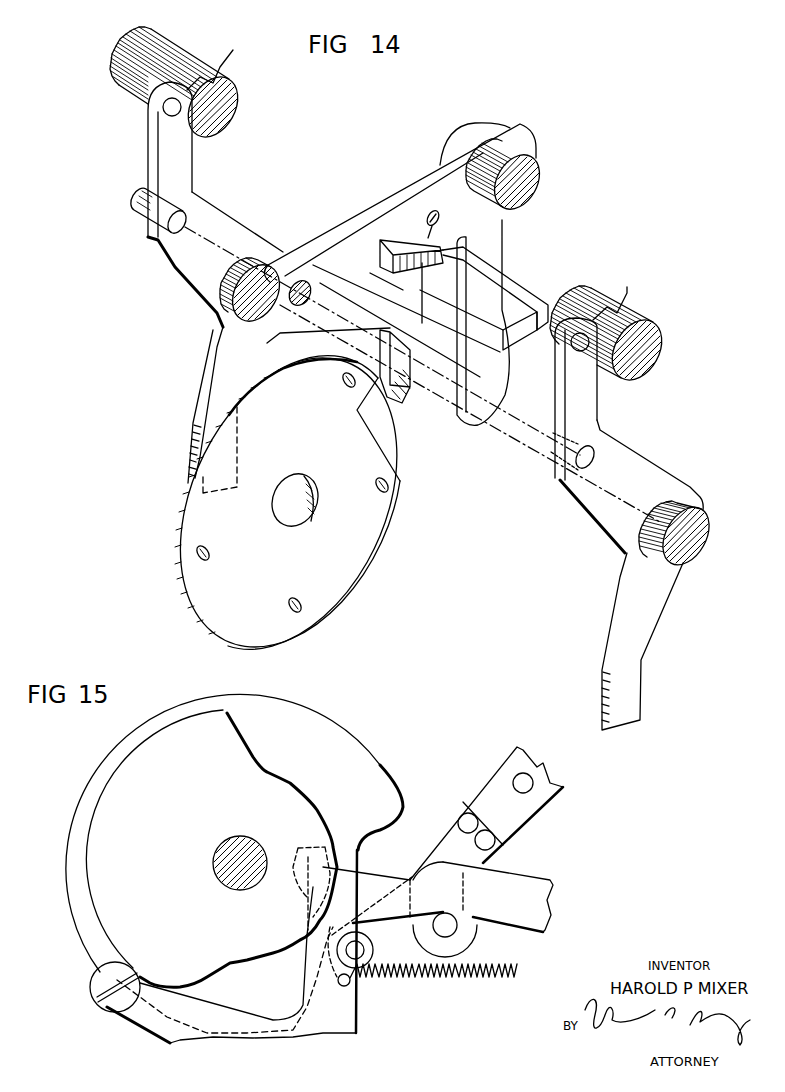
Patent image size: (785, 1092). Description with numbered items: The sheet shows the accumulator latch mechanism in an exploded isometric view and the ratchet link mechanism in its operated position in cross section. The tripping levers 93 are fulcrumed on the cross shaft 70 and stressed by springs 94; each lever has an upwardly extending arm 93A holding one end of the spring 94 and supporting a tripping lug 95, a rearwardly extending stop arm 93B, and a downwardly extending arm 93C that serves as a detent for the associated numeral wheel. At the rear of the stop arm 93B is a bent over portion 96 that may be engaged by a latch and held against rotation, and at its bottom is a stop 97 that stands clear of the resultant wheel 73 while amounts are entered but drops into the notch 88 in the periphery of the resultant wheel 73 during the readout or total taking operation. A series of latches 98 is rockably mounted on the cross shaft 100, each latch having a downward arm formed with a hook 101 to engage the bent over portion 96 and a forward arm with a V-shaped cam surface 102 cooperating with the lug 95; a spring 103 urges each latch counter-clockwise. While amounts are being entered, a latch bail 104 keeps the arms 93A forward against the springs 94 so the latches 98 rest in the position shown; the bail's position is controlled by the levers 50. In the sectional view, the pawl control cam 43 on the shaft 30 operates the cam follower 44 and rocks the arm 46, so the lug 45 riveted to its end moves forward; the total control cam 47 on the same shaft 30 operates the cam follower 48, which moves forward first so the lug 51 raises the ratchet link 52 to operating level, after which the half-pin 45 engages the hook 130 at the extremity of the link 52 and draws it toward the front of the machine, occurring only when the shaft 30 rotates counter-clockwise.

In FIG. 15, the shaft 30 is at (253, 843).
In FIG. 15, the pawl control cam 43 is at (236, 762).
In FIG. 15, the cam follower 44 is at (117, 993).
In FIG. 15, the lug 45 is at (323, 868).
In FIG. 15, the arm 46 is at (248, 1022).
In FIG. 15, the total control cam 47 is at (377, 768).
In FIG. 15, the cam follower 48 is at (365, 977).
In FIG. 15, the levers 50 is at (532, 810).
In FIG. 15, the lug 51 is at (452, 930).
In FIG. 15, the ratchet link 52 is at (530, 885).
In FIG. 14, the cross shaft 70 is at (262, 248).
In FIG. 14, the resultant wheel 73 is at (358, 541).
In FIG. 14, the notch 88 is at (377, 404).
In FIG. 14, the tripping lever 93 is at (226, 226).
In FIG. 14, the upwardly extending arm 93A is at (175, 135).
In FIG. 14, the stop arm 93B is at (422, 315).
In FIG. 14, the downwardly extending arm 93C is at (200, 450).
In FIG. 14, the spring 94 is at (213, 67).
In FIG. 14, the tripping lug 95 is at (133, 212).
In FIG. 14, the bent over portion 96 is at (534, 307).
In FIG. 14, the stop 97 is at (400, 397).
In FIG. 14, the latch 98 is at (522, 130).
In FIG. 14, the cross shaft 100 is at (539, 186).
In FIG. 14, the hook 101 is at (513, 343).
In FIG. 14, the V-shaped cam surface 102 is at (318, 268).
In FIG. 14, the spring 103 is at (428, 234).
In FIG. 14, the latch bail 104 is at (228, 105).
In FIG. 15, the hook 130 is at (333, 873).